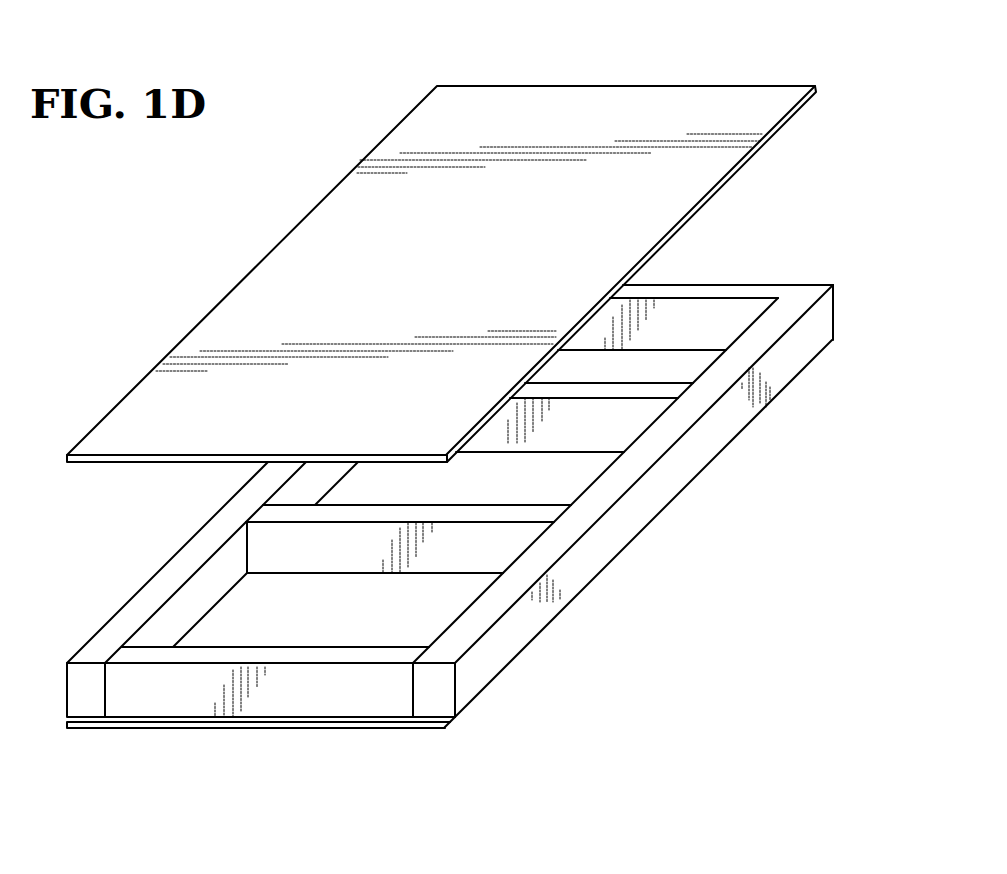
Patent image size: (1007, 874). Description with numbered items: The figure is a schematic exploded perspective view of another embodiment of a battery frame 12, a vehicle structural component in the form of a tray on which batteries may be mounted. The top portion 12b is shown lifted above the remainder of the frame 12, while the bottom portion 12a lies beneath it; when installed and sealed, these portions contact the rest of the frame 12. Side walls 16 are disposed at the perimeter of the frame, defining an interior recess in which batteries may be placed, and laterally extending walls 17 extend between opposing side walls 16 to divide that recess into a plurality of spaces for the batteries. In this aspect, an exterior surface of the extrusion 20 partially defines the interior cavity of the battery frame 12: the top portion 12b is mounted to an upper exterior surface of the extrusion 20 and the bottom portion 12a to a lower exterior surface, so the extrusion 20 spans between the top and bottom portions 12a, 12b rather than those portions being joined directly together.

The battery frame 12 is at (146, 272).
The bottom portion 12a is at (313, 730).
The top portion 12b is at (623, 98).
The side walls 16 is at (716, 495).
The laterally extending walls 17 is at (650, 386).
The extrusion 20 is at (621, 534).